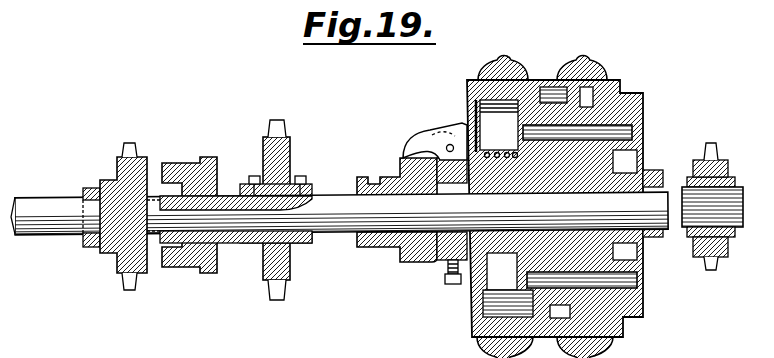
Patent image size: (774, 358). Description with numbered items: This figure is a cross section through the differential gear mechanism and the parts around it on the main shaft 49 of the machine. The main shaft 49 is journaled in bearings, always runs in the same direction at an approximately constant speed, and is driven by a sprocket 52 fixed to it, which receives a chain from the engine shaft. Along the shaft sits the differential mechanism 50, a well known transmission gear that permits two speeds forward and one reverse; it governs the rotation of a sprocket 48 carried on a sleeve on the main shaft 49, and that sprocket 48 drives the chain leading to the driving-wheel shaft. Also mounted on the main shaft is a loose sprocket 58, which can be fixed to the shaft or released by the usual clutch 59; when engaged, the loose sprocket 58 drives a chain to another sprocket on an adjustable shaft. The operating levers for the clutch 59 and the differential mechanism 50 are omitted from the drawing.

The sprocket 48 is at (695, 238).
The main shaft 49 is at (712, 175).
The differential mechanism 50 is at (565, 193).
The sprocket 52 is at (288, 137).
The loose sprocket 58 is at (143, 157).
The clutch 59 is at (198, 272).